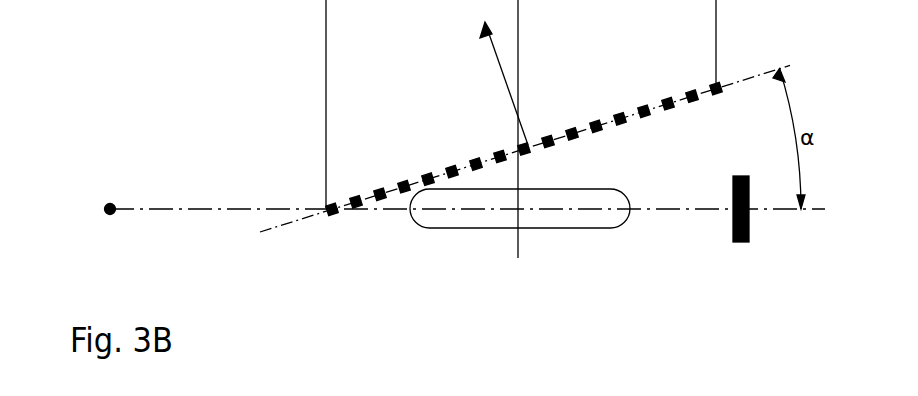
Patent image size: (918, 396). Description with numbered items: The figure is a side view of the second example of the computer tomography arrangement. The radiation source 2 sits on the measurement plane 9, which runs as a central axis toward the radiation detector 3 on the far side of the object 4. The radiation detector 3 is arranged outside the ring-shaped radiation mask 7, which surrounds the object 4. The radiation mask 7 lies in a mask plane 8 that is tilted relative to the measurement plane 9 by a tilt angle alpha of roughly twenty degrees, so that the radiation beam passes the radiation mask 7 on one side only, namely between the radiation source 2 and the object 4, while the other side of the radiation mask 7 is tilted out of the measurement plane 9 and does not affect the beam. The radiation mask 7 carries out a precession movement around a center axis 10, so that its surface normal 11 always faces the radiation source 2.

The radiation source 2 is at (148, 183).
The radiation detector 3 is at (706, 228).
The object 4 is at (501, 233).
The radiation mask 7 is at (524, 146).
The mask plane 8 is at (525, 183).
The measurement plane 9 is at (467, 236).
The center axis 10 is at (488, 137).
The surface normal 11 is at (482, 83).